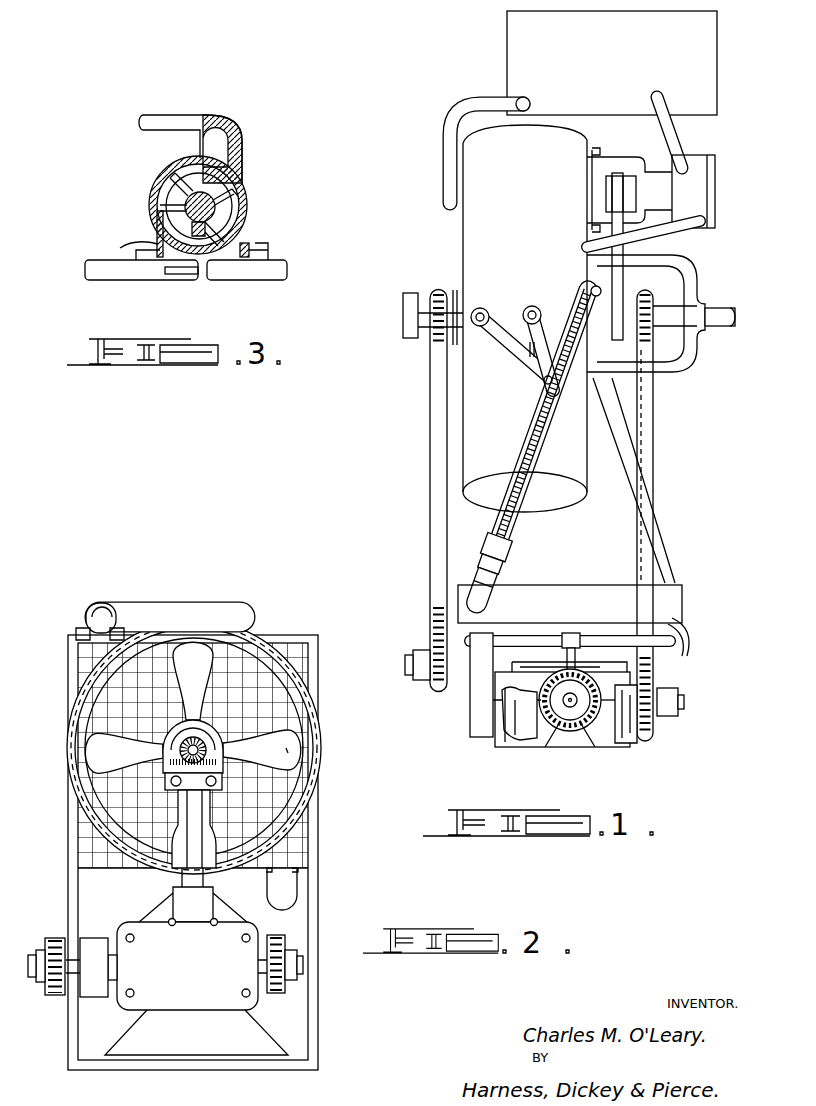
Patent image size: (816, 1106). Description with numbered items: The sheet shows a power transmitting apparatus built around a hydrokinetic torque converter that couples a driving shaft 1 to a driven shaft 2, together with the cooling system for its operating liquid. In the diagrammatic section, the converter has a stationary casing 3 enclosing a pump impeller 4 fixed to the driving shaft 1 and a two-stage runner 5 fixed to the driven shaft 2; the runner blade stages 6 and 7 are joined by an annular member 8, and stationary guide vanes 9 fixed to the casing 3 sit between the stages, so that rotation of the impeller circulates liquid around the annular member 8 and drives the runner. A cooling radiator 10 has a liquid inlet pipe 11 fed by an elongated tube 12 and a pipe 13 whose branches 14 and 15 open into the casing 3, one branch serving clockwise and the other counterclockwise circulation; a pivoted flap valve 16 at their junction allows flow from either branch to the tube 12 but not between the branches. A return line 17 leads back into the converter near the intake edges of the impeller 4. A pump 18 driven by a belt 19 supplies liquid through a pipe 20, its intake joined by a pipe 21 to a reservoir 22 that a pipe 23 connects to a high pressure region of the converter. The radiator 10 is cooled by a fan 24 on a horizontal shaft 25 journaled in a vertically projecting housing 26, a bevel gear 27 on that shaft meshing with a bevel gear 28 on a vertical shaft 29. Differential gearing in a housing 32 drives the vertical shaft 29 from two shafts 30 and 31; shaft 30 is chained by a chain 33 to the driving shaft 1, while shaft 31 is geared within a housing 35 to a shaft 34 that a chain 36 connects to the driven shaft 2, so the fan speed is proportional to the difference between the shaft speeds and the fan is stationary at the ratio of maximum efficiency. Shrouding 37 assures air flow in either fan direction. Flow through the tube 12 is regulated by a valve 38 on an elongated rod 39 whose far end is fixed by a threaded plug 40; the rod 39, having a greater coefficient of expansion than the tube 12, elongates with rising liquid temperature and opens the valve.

In FIG. 3, the driving shaft 1 is at (150, 279).
In FIG. 1, the driving shaft 1 is at (724, 315).
In FIG. 3, the driven shaft 2 is at (253, 279).
In FIG. 1, the driven shaft 2 is at (405, 336).
In FIG. 3, the stationary casing 3 is at (150, 200).
In FIG. 1, the stationary casing 3 is at (462, 262).
In FIG. 3, the pump impeller 4 is at (170, 224).
In FIG. 3, the two-stage runner 5 is at (252, 252).
In FIG. 3, the first runner stage blades 6 is at (168, 182).
In FIG. 3, the second runner stage blades 7 is at (232, 205).
In FIG. 3, the annular member 8 is at (225, 230).
In FIG. 3, the stationary guide vanes 9 is at (208, 178).
In FIG. 1, the cooling radiator 10 is at (580, 585).
In FIG. 1, the liquid inlet pipe 11 is at (485, 542).
In FIG. 1, the elongated tube 12 is at (535, 436).
In FIG. 2, the elongated tube 12 is at (172, 612).
In FIG. 3, the pipe 13 is at (200, 141).
In FIG. 1, the pipe 13 is at (548, 384).
In FIG. 3, the branch pipe 14 is at (246, 186).
In FIG. 1, the branch pipe 14 is at (503, 342).
In FIG. 1, the branch pipe 15 is at (541, 330).
In FIG. 1, the pivoted flap valve 16 is at (528, 358).
In FIG. 3, the return line 17 is at (125, 244).
In FIG. 1, the return line 17 is at (630, 488).
In FIG. 1, the pump 18 is at (702, 187).
In FIG. 1, the belt 19 is at (630, 250).
In FIG. 1, the pipe 20 is at (688, 236).
In FIG. 1, the pipe 21 is at (684, 137).
In FIG. 1, the reservoir 22 is at (712, 71).
In FIG. 1, the pipe 23 is at (447, 151).
In FIG. 1, the fan 24 is at (665, 674).
In FIG. 2, the fan 24 is at (288, 753).
In FIG. 1, the horizontal shaft 25 is at (580, 640).
In FIG. 2, the vertically projecting housing 26 is at (185, 870).
In FIG. 1, the bevel gear 27 is at (505, 678).
In FIG. 2, the bevel gear 27 is at (198, 722).
In FIG. 1, the bevel gear 28 is at (572, 716).
In FIG. 2, the bevel gear 28 is at (160, 760).
In FIG. 1, the vertical shaft 29 is at (586, 706).
In FIG. 2, the vertical shaft 29 is at (200, 810).
In FIG. 1, the shaft 30 is at (651, 733).
In FIG. 1, the shaft 31 is at (512, 736).
In FIG. 2, the housing 32 is at (205, 977).
In FIG. 1, the chain 33 is at (660, 465).
In FIG. 2, the chain 33 is at (292, 946).
In FIG. 1, the shaft 34 is at (410, 662).
In FIG. 2, the shaft 34 is at (35, 970).
In FIG. 1, the housing 35 is at (470, 690).
In FIG. 2, the housing 35 is at (95, 992).
In FIG. 1, the chain 36 is at (432, 530).
In FIG. 2, the chain 36 is at (55, 937).
In FIG. 1, the shrouding 37 is at (692, 642).
In FIG. 2, the shrouding 37 is at (272, 642).
In FIG. 1, the valve 38 is at (520, 556).
In FIG. 1, the elongated rod 39 is at (542, 490).
In FIG. 1, the threaded plug 40 is at (590, 292).